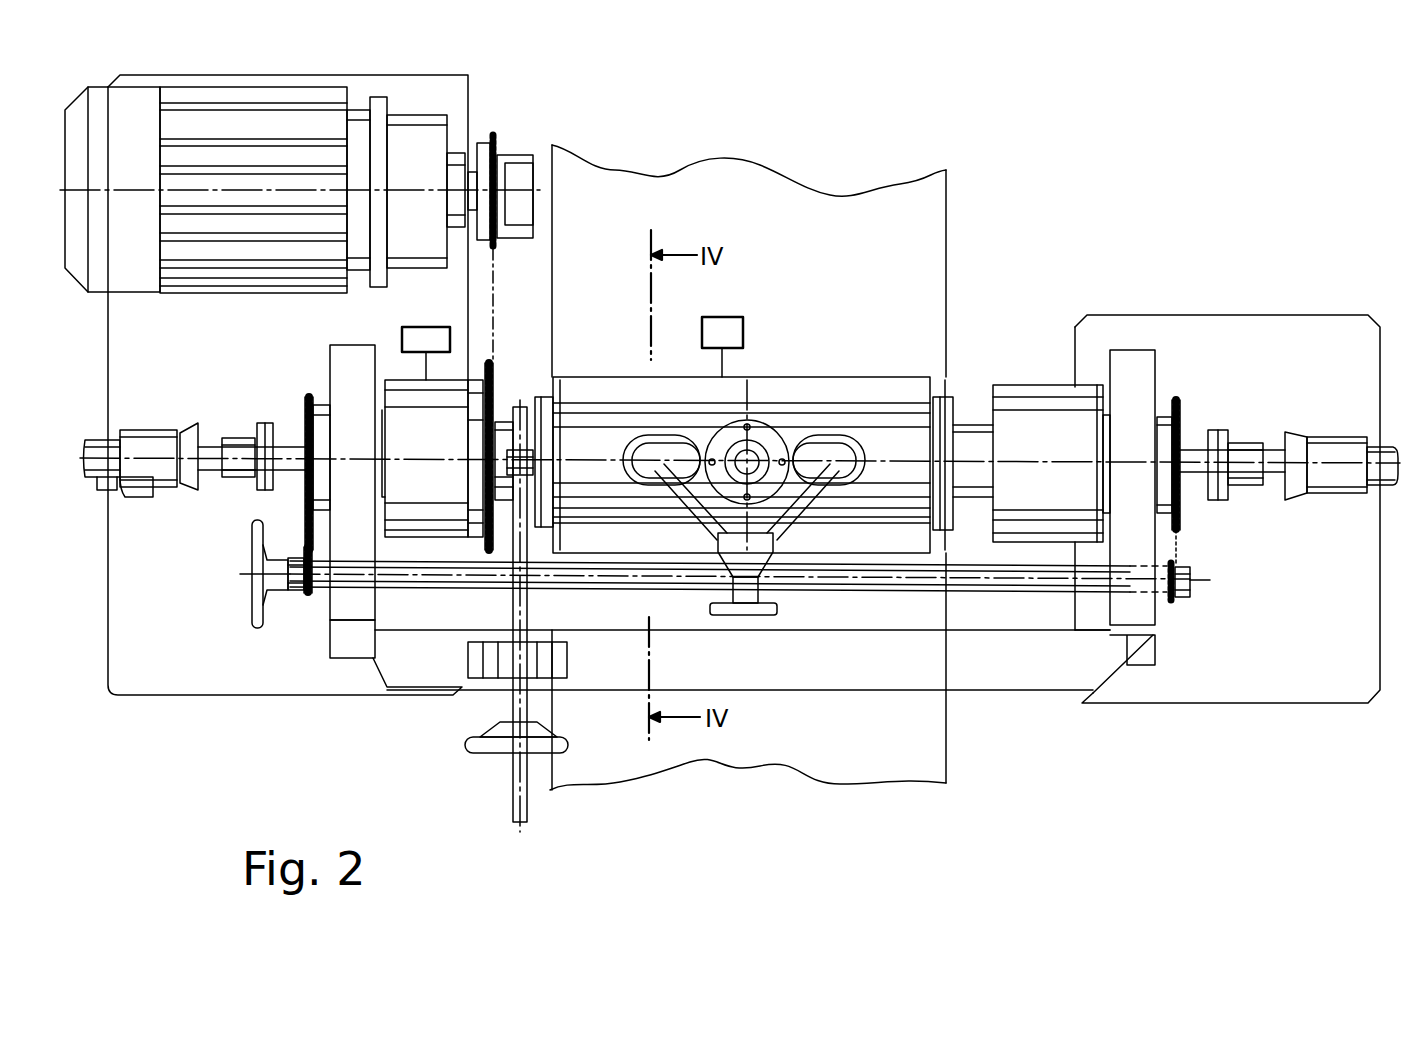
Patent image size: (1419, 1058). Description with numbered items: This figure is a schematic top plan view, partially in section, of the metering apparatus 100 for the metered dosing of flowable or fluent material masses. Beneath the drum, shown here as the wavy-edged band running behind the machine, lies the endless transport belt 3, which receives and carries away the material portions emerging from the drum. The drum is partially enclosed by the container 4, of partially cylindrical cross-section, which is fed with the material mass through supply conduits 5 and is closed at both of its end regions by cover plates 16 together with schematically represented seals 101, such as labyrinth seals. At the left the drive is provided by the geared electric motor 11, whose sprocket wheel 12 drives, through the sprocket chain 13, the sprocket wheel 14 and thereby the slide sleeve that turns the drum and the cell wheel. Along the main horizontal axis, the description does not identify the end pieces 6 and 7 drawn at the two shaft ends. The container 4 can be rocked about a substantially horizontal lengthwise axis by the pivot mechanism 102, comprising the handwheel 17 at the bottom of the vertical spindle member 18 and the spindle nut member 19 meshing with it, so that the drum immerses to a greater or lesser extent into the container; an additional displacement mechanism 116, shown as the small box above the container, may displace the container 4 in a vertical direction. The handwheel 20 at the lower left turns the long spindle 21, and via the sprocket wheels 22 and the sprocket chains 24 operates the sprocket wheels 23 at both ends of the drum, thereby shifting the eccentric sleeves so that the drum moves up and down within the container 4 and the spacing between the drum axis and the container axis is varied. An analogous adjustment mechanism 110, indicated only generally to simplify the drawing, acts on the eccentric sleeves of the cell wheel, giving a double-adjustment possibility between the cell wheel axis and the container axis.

The transport belt 3 is at (818, 243).
The container 4 is at (888, 390).
The supply conduits 5 is at (813, 458).
The shaft 6 is at (208, 445).
The handle 7 is at (148, 440).
The electric motor 11 is at (250, 133).
The sprocket wheel 12 is at (494, 133).
The sprocket chain 13 is at (496, 280).
The sprocket wheel 14 is at (494, 368).
The cover plates 16 is at (568, 388).
The handwheel 17 is at (493, 754).
The spindle member 18 is at (530, 704).
The spindle nut member 19 is at (510, 660).
The handwheel 20 is at (250, 608).
The spindle 21 is at (872, 598).
The sprocket wheels 22 is at (308, 597).
The sprocket wheels 23 is at (312, 395).
The sprocket chains 24 is at (302, 522).
The metering apparatus 100 is at (1016, 270).
The seals 101 is at (925, 397).
The pivot mechanism 102 is at (457, 657).
The adjustment mechanism 110 is at (405, 341).
The displacement mechanism 116 is at (708, 331).